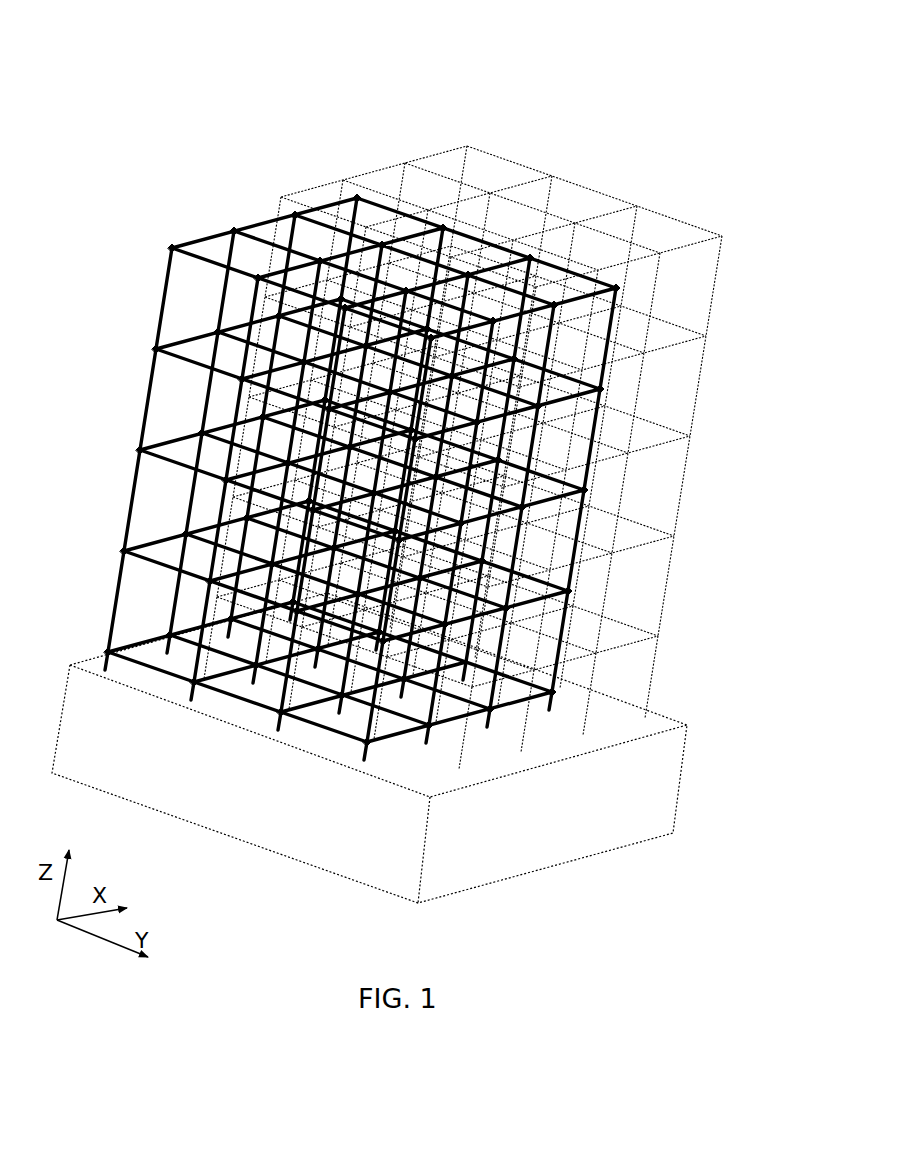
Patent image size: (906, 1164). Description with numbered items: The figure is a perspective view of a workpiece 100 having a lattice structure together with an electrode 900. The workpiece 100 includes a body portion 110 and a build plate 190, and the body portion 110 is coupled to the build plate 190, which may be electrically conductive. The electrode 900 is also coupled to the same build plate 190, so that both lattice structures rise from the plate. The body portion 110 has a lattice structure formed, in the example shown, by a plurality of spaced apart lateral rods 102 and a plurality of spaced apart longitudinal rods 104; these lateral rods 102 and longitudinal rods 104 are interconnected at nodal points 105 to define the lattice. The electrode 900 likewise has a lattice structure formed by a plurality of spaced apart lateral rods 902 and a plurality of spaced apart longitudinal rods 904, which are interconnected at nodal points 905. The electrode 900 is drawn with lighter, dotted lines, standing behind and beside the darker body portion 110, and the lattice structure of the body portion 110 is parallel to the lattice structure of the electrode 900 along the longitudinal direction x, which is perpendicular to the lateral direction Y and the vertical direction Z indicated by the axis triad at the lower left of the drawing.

The workpiece 100 is at (418, 386).
The lateral rods 102 is at (157, 283).
The longitudinal rods 104 is at (245, 350).
The nodal points 105 is at (550, 691).
The body portion 110 is at (621, 290).
The build plate 190 is at (663, 785).
The electrode 900 is at (496, 436).
The lateral rods 902 is at (280, 210).
The longitudinal rods 904 is at (473, 223).
The nodal points 905 is at (660, 637).